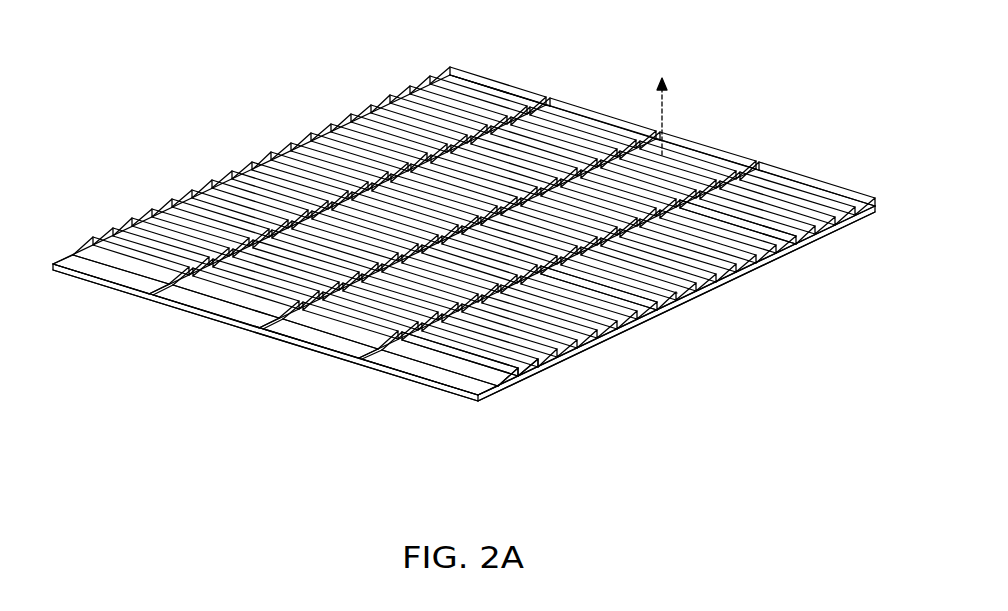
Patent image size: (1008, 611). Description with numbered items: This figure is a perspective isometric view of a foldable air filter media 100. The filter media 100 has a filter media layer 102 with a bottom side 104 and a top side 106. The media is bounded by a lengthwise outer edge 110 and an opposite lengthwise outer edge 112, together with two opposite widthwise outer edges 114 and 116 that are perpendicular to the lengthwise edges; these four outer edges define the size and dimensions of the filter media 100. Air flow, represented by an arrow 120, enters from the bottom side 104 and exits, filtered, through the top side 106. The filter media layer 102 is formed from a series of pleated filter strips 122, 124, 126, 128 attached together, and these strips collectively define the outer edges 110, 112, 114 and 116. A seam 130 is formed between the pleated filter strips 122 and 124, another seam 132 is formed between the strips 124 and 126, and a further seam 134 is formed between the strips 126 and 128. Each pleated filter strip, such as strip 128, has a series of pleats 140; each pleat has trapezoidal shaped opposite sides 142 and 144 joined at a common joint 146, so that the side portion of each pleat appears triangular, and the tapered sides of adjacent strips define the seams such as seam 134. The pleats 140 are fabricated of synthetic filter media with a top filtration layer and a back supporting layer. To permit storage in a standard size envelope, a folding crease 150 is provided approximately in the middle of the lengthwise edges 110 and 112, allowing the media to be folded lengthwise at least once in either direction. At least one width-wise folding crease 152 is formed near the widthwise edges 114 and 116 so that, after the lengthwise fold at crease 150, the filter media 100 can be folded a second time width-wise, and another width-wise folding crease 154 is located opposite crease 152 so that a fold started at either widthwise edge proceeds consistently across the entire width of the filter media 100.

The foldable air filter media 100 is at (179, 182).
The filter media layer 102 is at (440, 100).
The bottom side 104 is at (307, 350).
The top side 106 is at (98, 238).
The lengthwise outer edge 110 is at (303, 143).
The opposite lengthwise outer edge 112 is at (587, 350).
The widthwise outer edge 114 is at (707, 147).
The widthwise outer edge 116 is at (107, 284).
The arrow 120 is at (677, 142).
The pleated filter strip 122 is at (467, 88).
The pleated filter strip 124 is at (590, 137).
The pleated filter strip 126 is at (735, 163).
The pleated filter strip 128 is at (802, 186).
The seam 130 is at (163, 290).
The seam 132 is at (258, 325).
The seam 134 is at (374, 348).
The pleats 140 is at (742, 232).
The trapezoidal shaped side 142 is at (332, 347).
The trapezoidal shaped side 144 is at (452, 384).
The common joint 146 is at (497, 372).
The folding crease 150 is at (697, 290).
The width-wise folding crease 152 is at (212, 316).
The width-wise folding crease 154 is at (518, 95).